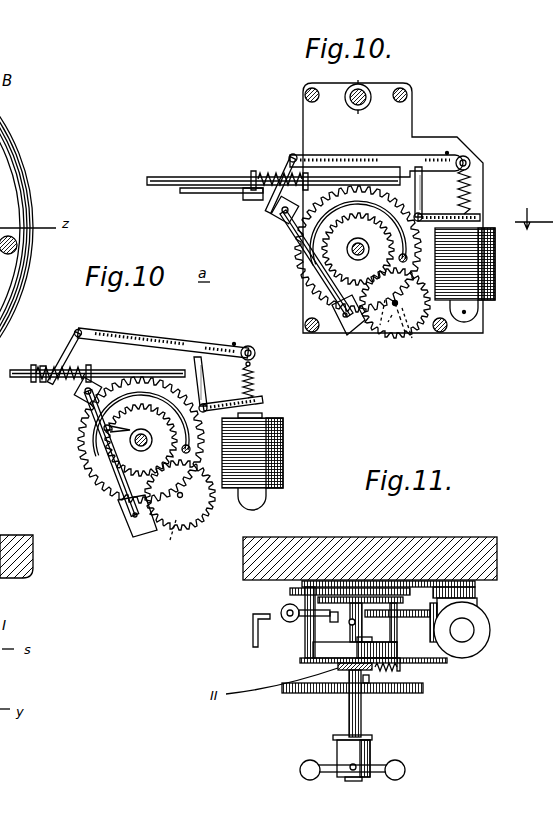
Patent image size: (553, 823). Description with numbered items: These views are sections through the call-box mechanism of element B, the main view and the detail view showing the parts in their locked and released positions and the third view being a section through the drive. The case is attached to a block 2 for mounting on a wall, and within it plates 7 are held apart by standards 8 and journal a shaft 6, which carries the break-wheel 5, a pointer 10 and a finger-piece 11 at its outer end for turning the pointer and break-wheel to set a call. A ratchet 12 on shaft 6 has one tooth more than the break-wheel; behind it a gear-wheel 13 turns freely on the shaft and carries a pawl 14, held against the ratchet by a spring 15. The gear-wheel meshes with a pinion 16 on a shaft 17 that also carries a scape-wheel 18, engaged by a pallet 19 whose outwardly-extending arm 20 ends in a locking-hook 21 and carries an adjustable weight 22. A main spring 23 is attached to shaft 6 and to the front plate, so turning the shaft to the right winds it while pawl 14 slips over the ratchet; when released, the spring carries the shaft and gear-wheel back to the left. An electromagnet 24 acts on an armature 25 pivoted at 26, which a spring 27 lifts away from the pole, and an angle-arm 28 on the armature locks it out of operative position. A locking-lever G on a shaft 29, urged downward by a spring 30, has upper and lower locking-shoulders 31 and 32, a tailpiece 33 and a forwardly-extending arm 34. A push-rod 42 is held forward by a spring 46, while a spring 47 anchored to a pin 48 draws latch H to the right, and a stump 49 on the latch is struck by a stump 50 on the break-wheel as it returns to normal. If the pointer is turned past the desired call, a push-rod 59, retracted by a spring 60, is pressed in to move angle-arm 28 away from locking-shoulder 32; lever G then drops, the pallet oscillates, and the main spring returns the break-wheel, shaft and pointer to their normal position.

In FIG. 10A, the block 2 is at (37, 566).
In FIG. 11, the block 2 is at (341, 547).
In FIG. 11, the break-wheel 5 is at (290, 694).
In FIG. 10, the shaft 6 is at (347, 250).
In FIG. 10A, the shaft 6 is at (143, 437).
In FIG. 10, the plates 7 is at (303, 120).
In FIG. 11, the plates 7 is at (478, 589).
In FIG. 10, the standards 8 is at (410, 96).
In FIG. 11, the standards 8 is at (305, 645).
In FIG. 11, the pointer 10 is at (336, 742).
In FIG. 11, the finger-piece 11 is at (300, 770).
In FIG. 10, the ratchet 12 is at (354, 245).
In FIG. 10A, the ratchet 12 is at (108, 440).
In FIG. 11, the ratchet 12 is at (318, 600).
In FIG. 10, the gear-wheel 13 is at (316, 282).
In FIG. 10A, the gear-wheel 13 is at (100, 470).
In FIG. 11, the gear-wheel 13 is at (290, 592).
In FIG. 10, the pawl 14 is at (338, 290).
In FIG. 10A, the pawl 14 is at (103, 428).
In FIG. 10, the spring 15 is at (408, 256).
In FIG. 10A, the spring 15 is at (191, 448).
In FIG. 11, the spring 15 is at (400, 604).
In FIG. 10, the pinion 16 is at (410, 335).
In FIG. 11, the pinion 16 is at (480, 607).
In FIG. 10, the shaft 17 is at (392, 330).
In FIG. 10A, the shaft 17 is at (177, 497).
In FIG. 11, the shaft 17 is at (410, 620).
In FIG. 10, the scape-wheel 18 is at (376, 325).
In FIG. 10A, the scape-wheel 18 is at (176, 530).
In FIG. 11, the scape-wheel 18 is at (426, 630).
In FIG. 10, the pallet 19 is at (346, 336).
In FIG. 10A, the pallet 19 is at (136, 538).
In FIG. 11, the pallet 19 is at (340, 620).
In FIG. 10, the arm 20 is at (297, 236).
In FIG. 10A, the arm 20 is at (100, 492).
In FIG. 11, the arm 20 is at (300, 616).
In FIG. 10, the locking-hook 21 is at (248, 197).
In FIG. 10A, the locking-hook 21 is at (48, 370).
In FIG. 11, the locking-hook 21 is at (252, 636).
In FIG. 10, the weight 22 is at (272, 216).
In FIG. 10A, the weight 22 is at (74, 394).
In FIG. 11, the weight 22 is at (292, 623).
In FIG. 11, the main spring 23 is at (355, 648).
In FIG. 10, the electromagnet 24 is at (495, 273).
In FIG. 10A, the electromagnet 24 is at (284, 438).
In FIG. 11, the electromagnet 24 is at (472, 652).
In FIG. 10, the armature 25 is at (482, 214).
In FIG. 10A, the armature 25 is at (263, 401).
In FIG. 10, the pivot 26 is at (425, 214).
In FIG. 10A, the pivot 26 is at (209, 404).
In FIG. 10, the spring 27 is at (472, 188).
In FIG. 10A, the spring 27 is at (254, 382).
In FIG. 10, the angle-arm 28 is at (423, 195).
In FIG. 10A, the angle-arm 28 is at (204, 385).
In FIG. 10, the shaft 29 is at (470, 163).
In FIG. 10A, the shaft 29 is at (252, 348).
In FIG. 10, the spring 30 is at (448, 152).
In FIG. 10A, the spring 30 is at (234, 342).
In FIG. 10, the upper locking-shoulder 31 is at (418, 165).
In FIG. 10A, the upper locking-shoulder 31 is at (197, 345).
In FIG. 10, the lower locking-shoulder 32 is at (402, 162).
In FIG. 10A, the lower locking-shoulder 32 is at (170, 340).
In FIG. 10, the tailpiece 33 is at (280, 170).
In FIG. 10A, the tailpiece 33 is at (68, 348).
In FIG. 10, the forwardly-extending arm 34 is at (292, 154).
In FIG. 10A, the forwardly-extending arm 34 is at (78, 329).
In FIG. 10, the push-rod 42 is at (316, 88).
In FIG. 10, the spring 46 is at (366, 88).
In FIG. 11, the spring 47 is at (403, 675).
In FIG. 11, the pin 48 is at (400, 670).
In FIG. 11, the stump 49 is at (368, 690).
In FIG. 11, the stump 50 is at (400, 692).
In FIG. 10, the push-rod 59 is at (178, 177).
In FIG. 10A, the push-rod 59 is at (138, 366).
In FIG. 10, the spring 60 is at (250, 188).